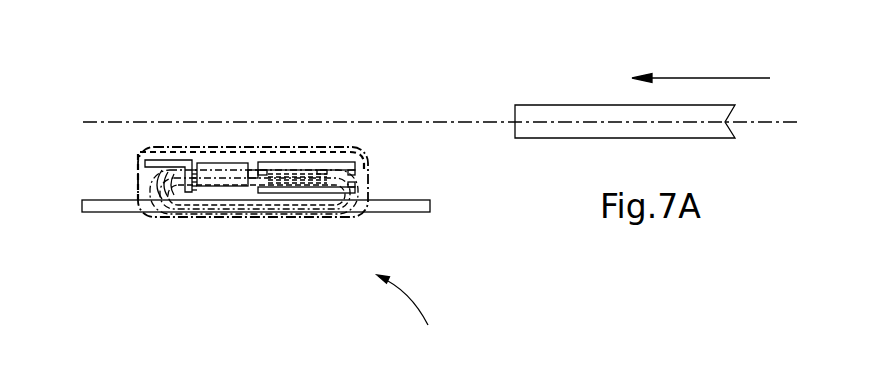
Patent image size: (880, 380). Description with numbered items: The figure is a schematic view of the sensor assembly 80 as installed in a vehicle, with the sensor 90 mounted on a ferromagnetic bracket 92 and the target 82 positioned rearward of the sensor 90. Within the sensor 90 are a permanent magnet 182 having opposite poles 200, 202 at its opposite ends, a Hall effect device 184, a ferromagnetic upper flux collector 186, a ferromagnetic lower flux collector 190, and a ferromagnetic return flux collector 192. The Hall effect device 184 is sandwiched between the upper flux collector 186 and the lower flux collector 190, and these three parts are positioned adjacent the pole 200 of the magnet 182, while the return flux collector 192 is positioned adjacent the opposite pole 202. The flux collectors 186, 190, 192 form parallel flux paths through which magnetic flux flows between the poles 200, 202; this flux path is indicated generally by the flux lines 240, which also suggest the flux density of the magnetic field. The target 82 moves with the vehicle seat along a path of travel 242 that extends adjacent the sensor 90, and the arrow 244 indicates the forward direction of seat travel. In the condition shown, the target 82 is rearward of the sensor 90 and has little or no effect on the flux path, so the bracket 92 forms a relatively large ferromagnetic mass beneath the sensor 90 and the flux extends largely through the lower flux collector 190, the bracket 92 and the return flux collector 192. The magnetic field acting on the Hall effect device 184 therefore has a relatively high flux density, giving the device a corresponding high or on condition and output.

The sensor assembly 80 is at (408, 311).
The target 82 is at (613, 130).
The sensor 90 is at (163, 178).
The bracket 92 is at (437, 212).
The permanent magnet 182 is at (222, 178).
The Hall effect device 184 is at (343, 175).
The upper flux collector 186 is at (317, 163).
The lower flux collector 190 is at (323, 187).
The return flux collector 192 is at (160, 163).
The pole 200 is at (247, 178).
The pole 202 is at (198, 180).
The flux lines 240 is at (298, 205).
The path of travel 242 is at (765, 122).
The arrow indicating forward direction of seat travel 244 is at (748, 78).